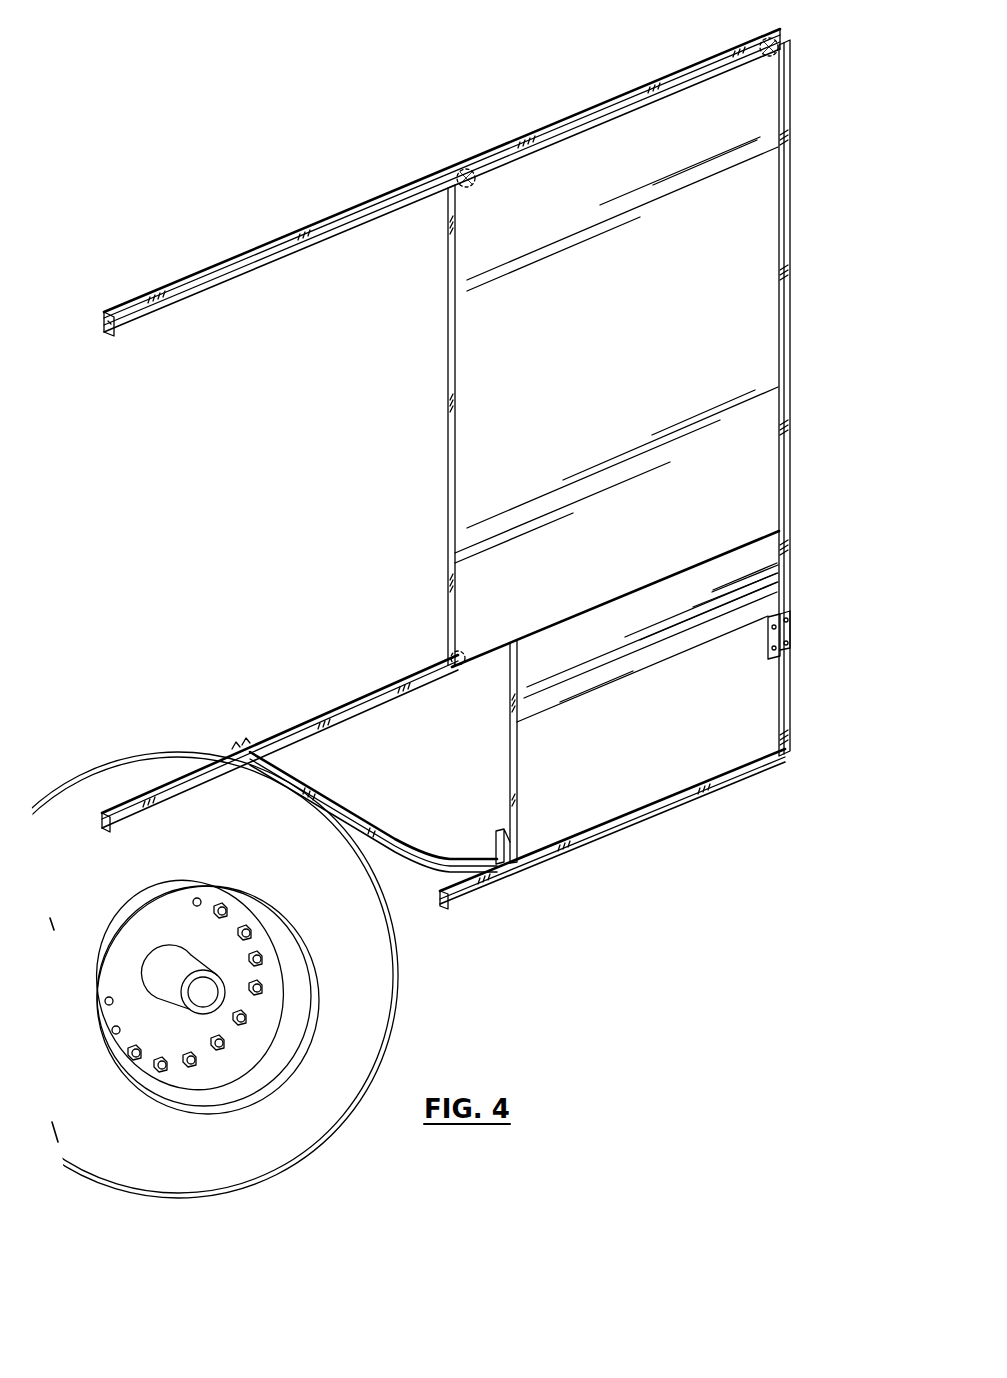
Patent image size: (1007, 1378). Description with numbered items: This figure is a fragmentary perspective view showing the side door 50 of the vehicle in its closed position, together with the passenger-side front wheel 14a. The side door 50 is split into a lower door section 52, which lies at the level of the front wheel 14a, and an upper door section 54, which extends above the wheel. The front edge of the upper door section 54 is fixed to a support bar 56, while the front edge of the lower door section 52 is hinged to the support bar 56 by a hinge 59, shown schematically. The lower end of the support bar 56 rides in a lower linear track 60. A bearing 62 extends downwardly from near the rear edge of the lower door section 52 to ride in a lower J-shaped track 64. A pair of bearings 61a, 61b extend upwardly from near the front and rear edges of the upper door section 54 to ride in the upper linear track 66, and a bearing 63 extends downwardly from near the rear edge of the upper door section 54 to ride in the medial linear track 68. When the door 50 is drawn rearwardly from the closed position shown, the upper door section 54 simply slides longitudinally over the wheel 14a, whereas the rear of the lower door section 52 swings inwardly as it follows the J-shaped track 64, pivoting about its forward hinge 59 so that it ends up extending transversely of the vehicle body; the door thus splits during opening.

The passenger-side front wheel 14a is at (400, 987).
The side door 50 is at (642, 446).
The lower door section 52 is at (685, 707).
The upper door section 54 is at (660, 362).
The support bar 56 is at (791, 357).
The hinge 59 is at (791, 633).
The lower linear track 60 is at (636, 820).
The bearing 61a is at (764, 43).
The bearing 61b is at (461, 172).
The bearing 62 is at (497, 834).
The bearing 63 is at (461, 667).
The lower J-shaped track 64 is at (362, 820).
The upper linear track 66 is at (314, 255).
The medial linear track 68 is at (342, 708).